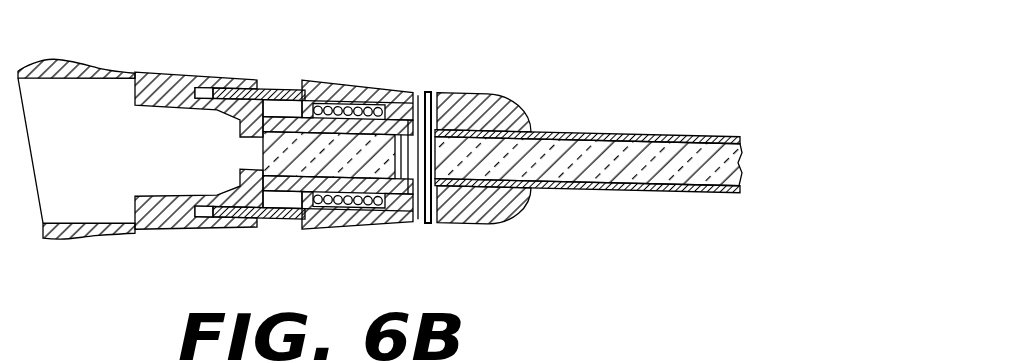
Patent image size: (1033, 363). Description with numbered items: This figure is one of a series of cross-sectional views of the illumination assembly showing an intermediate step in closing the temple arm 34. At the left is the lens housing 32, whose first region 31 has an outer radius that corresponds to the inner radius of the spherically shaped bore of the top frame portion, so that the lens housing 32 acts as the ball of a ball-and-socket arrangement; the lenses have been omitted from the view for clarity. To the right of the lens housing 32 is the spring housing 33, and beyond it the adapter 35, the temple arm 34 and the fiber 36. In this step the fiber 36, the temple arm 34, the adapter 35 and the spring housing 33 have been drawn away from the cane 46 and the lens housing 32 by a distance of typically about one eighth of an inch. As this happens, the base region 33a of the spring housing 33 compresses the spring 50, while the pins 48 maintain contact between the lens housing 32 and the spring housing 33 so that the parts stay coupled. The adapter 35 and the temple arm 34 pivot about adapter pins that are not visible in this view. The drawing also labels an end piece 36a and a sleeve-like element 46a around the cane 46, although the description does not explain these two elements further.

The first region 31 is at (60, 58).
The lens housing 32 is at (125, 70).
The spring housing 33 is at (385, 66).
The base region 33a is at (288, 88).
The temple arm 34 is at (627, 133).
The adapter 35 is at (500, 102).
The fiber 36 is at (653, 182).
The end plate 36a is at (417, 213).
The cane 46 is at (260, 155).
The sleeve 46a is at (363, 230).
The pins 48 is at (273, 95).
The spring 50 is at (350, 100).